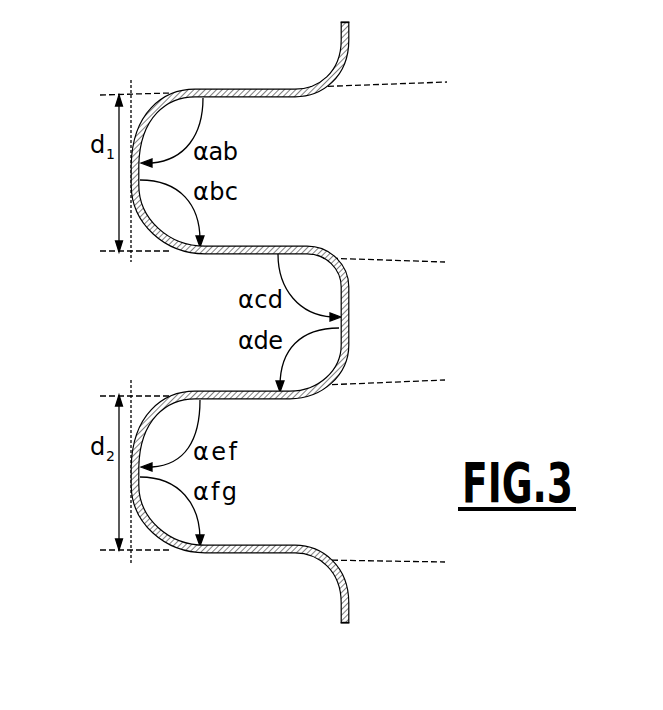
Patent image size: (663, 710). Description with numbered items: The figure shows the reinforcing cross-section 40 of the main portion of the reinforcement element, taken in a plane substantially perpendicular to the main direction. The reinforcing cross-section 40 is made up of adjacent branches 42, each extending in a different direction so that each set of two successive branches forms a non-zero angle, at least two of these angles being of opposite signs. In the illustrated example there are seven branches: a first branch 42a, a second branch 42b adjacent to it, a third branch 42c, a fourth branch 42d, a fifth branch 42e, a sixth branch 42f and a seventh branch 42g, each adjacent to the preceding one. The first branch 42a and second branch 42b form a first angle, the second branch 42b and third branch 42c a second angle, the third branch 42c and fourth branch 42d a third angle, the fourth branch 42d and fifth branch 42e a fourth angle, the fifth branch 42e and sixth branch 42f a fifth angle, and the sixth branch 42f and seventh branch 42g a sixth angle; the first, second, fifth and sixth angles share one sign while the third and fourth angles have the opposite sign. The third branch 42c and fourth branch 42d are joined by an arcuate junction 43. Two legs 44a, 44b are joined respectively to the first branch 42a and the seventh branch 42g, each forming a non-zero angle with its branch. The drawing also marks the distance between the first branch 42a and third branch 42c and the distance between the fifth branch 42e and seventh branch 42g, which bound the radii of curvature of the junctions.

The reinforcing cross-section 40 is at (400, 328).
The adjacent branches 42 is at (272, 99).
The first branch 42a is at (253, 88).
The second branch 42b is at (130, 168).
The third branch 42c is at (227, 257).
The fourth branch 42d is at (333, 270).
The fifth branch 42e is at (227, 388).
The sixth branch 42f is at (130, 472).
The seventh branch 42g is at (253, 558).
The arcuate junction 43 is at (160, 95).
The first leg 44a is at (349, 28).
The second leg 44b is at (349, 617).